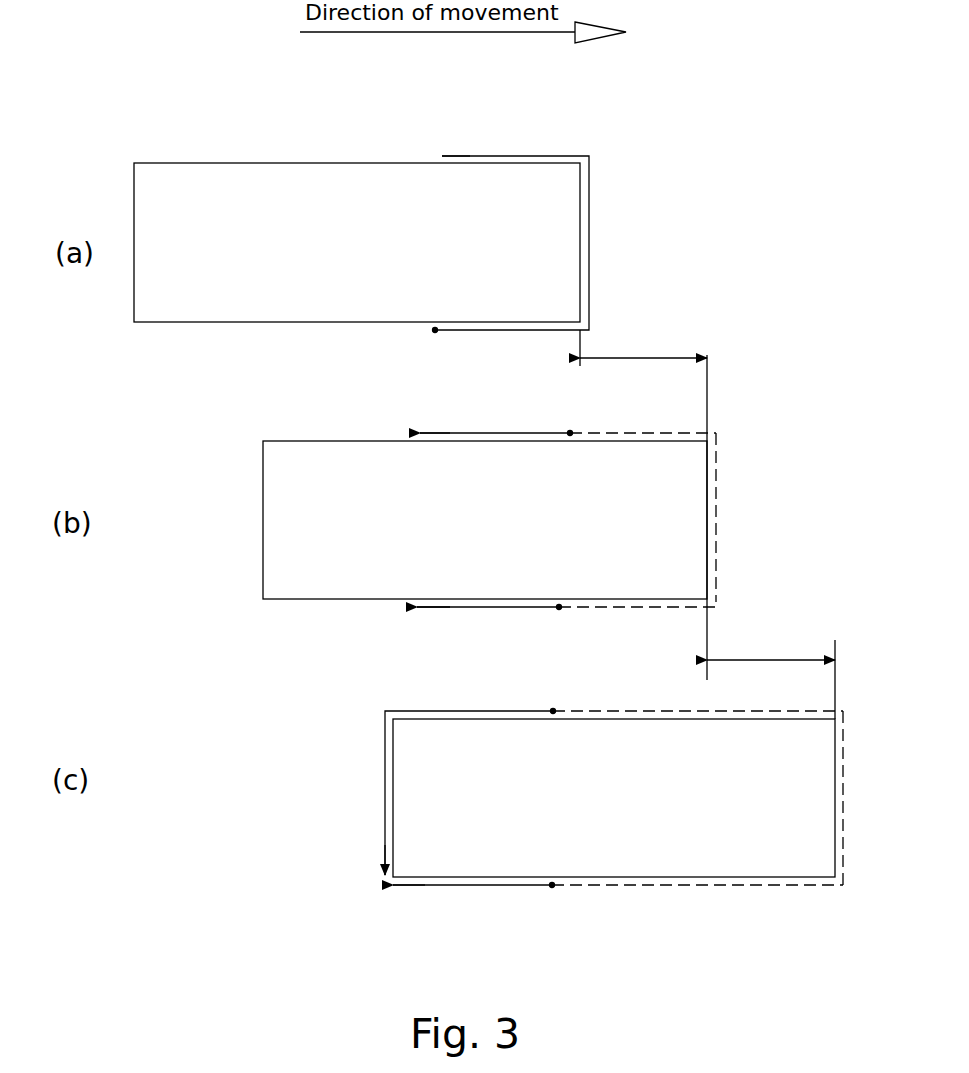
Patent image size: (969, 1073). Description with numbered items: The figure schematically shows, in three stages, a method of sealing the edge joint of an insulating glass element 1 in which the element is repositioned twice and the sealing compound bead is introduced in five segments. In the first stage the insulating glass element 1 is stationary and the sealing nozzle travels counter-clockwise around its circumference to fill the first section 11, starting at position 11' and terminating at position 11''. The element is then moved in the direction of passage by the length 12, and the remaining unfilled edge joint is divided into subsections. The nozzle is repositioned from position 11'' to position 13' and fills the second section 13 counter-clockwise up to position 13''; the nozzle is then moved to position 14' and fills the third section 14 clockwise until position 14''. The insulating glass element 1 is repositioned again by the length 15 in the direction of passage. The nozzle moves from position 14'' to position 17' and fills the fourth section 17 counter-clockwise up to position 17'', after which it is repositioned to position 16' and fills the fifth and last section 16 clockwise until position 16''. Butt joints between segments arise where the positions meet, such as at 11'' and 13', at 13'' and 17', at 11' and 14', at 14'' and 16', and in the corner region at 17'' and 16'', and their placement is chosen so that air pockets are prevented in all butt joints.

The insulating glass element 1 is at (148, 347).
The first section of the edge joint 11 is at (556, 243).
The starting position of section 11 11' is at (463, 355).
The end position of section 11 11'' is at (429, 122).
The repositioning length 12 is at (643, 505).
The second section of the edge joint 13 is at (568, 490).
The starting position of section 13 13' is at (587, 407).
The end position of section 13 13'' is at (414, 406).
The third section of the edge joint 14 is at (566, 636).
The starting position of section 14 14' is at (577, 634).
The end position of section 14 14'' is at (411, 636).
The second repositioning length 15 is at (771, 673).
The fifth section of the edge joint 16 is at (618, 919).
The starting position of section 16 16' is at (543, 918).
The end position of section 16 16'' is at (400, 919).
The fourth section of the edge joint 17 is at (579, 798).
The starting position of section 17 17' is at (535, 686).
The end position of section 17 17'' is at (345, 861).